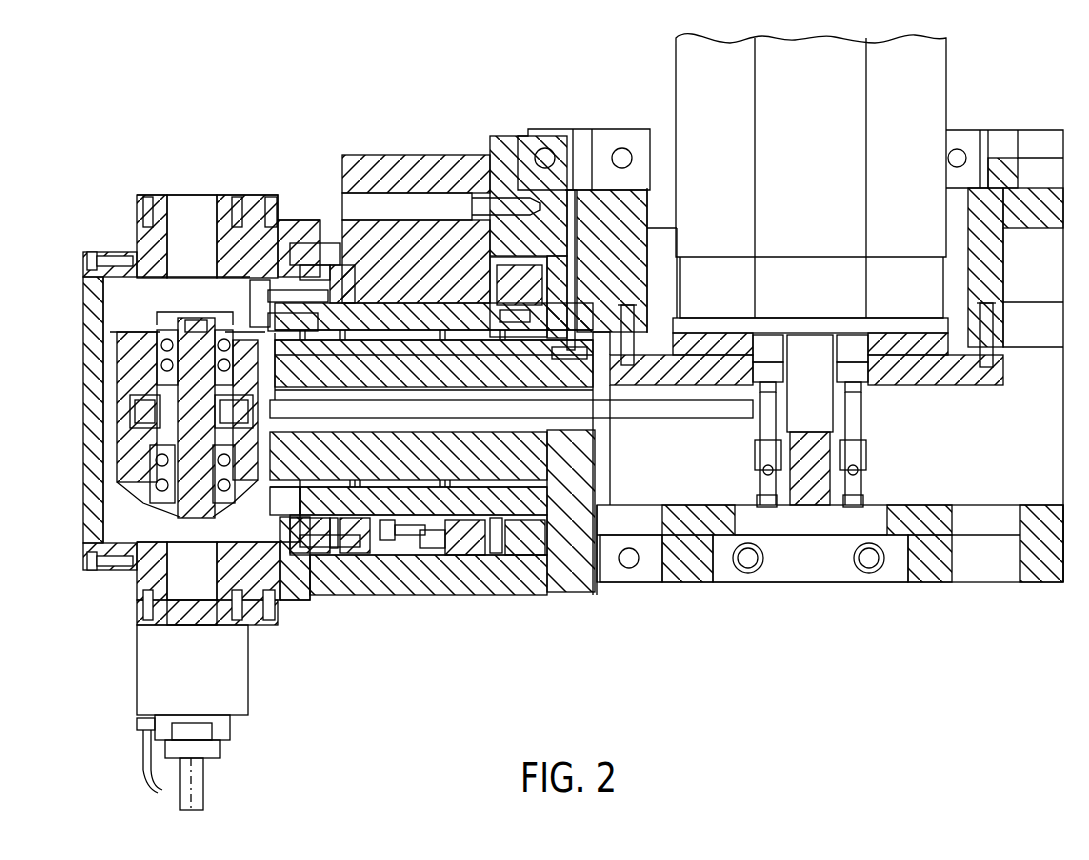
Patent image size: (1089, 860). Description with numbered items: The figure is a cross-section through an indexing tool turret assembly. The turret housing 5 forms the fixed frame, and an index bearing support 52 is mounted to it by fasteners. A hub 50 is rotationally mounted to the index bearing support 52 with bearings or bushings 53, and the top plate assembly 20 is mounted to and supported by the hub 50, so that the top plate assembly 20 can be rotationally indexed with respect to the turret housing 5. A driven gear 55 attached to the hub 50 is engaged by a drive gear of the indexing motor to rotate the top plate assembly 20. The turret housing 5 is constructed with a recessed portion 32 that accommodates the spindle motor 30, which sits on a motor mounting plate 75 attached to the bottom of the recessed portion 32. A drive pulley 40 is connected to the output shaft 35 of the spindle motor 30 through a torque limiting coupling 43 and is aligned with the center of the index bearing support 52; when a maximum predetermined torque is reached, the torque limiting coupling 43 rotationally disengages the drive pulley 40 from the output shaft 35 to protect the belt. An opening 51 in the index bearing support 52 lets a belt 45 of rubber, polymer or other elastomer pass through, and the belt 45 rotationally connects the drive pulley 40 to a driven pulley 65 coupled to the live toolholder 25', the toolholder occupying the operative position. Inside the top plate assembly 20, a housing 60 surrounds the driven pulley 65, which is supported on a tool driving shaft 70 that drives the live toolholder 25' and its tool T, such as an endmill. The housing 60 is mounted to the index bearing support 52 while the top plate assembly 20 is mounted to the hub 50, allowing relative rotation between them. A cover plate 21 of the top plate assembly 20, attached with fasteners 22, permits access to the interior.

The turret housing 5 is at (920, 573).
The top plate assembly 20 is at (253, 195).
The cover plate 21 is at (88, 408).
The fasteners 22 is at (85, 255).
The live toolholder 25' is at (175, 691).
The spindle motor 30 is at (927, 87).
The recessed portion 32 is at (958, 267).
The output shaft 35 is at (817, 398).
The drive pulley 40 is at (868, 413).
The torque limiting coupling 43 is at (807, 480).
The belt 45 is at (697, 412).
The hub 50 is at (387, 500).
The opening 51 is at (463, 423).
The index bearing support 52 is at (553, 446).
The bearings or bushings 53 is at (382, 333).
The driven gear 55 is at (528, 543).
The housing 60 is at (118, 363).
The driven pulley 65 is at (133, 417).
The tool driving shaft 70 is at (183, 332).
The motor mounting plate 75 is at (957, 380).
The tool T is at (197, 787).